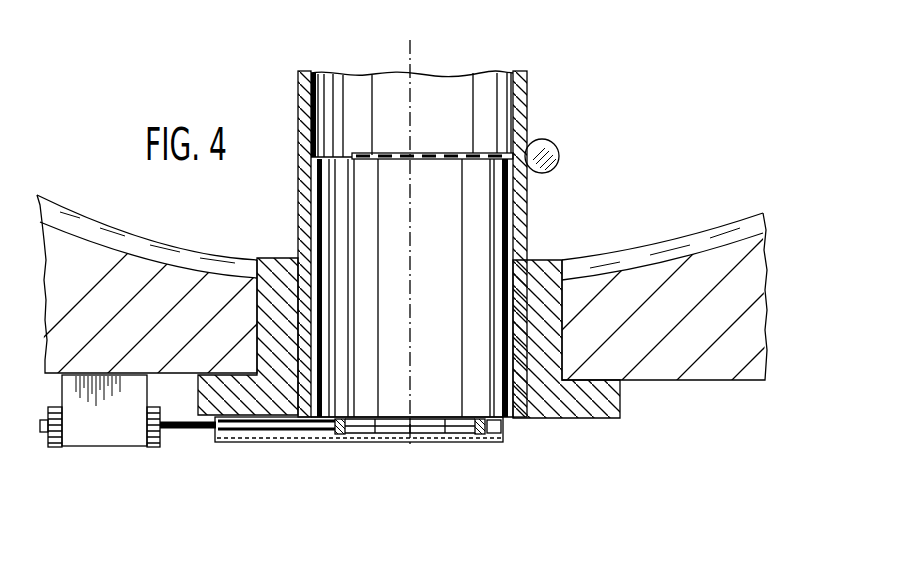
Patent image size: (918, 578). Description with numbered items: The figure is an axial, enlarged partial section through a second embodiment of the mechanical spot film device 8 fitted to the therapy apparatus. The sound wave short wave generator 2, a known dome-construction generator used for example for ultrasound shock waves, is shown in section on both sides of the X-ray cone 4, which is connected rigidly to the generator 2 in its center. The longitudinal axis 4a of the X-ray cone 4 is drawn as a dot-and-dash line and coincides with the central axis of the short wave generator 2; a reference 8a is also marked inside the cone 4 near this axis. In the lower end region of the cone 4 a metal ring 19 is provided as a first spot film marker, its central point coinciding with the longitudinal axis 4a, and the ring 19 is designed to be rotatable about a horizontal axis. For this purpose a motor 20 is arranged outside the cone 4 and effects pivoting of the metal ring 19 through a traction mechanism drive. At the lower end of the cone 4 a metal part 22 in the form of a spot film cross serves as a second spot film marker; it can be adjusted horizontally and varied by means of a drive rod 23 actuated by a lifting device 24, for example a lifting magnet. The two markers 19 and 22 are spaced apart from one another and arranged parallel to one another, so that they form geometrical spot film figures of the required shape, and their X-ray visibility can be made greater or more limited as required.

The sound wave short wave generator 2 is at (626, 288).
The X-ray cone 4 is at (527, 95).
The longitudinal axis 4a is at (423, 50).
The mechanical spot film device 8 is at (364, 269).
The plunger inner bore 8a is at (422, 298).
The metal ring 19 is at (400, 161).
The motor 20 is at (557, 147).
The metal part 22 is at (398, 443).
The drive rod 23 is at (189, 432).
The lifting device 24 is at (108, 429).